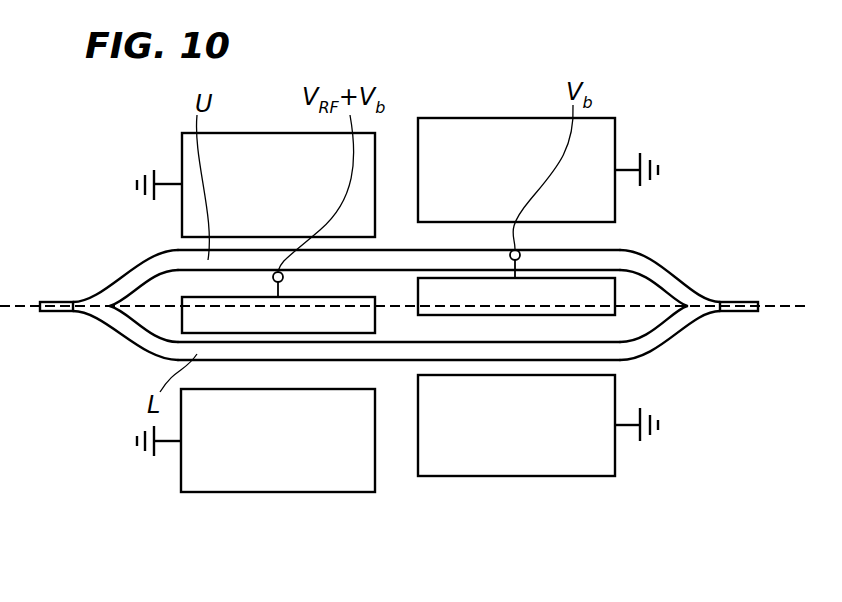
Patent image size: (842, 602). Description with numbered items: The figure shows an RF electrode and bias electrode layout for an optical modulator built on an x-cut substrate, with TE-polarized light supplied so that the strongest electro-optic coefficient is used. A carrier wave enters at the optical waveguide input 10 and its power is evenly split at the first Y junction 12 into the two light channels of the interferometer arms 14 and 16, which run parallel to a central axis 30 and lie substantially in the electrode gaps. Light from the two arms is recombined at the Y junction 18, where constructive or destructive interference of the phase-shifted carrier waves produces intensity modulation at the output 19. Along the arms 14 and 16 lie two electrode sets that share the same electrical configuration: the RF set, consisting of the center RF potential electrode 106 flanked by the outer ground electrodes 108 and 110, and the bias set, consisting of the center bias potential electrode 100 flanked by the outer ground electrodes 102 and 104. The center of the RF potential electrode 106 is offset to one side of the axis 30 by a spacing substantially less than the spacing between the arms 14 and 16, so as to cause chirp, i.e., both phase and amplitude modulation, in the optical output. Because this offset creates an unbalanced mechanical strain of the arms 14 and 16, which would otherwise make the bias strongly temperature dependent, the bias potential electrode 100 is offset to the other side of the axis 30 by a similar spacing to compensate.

The optical waveguide input 10 is at (63, 302).
The first Y junction 12 is at (118, 286).
The MZI arm 14 is at (387, 248).
The MZI arm 16 is at (403, 363).
The Y junction 18 is at (663, 271).
The output 19 is at (731, 312).
The axis 30 is at (152, 315).
The bias potential electrode 100 is at (603, 315).
The ground electrode 102 is at (433, 476).
The ground electrode 104 is at (478, 118).
The RF potential electrode 106 is at (195, 297).
The ground electrode 108 is at (202, 492).
The ground electrode 110 is at (242, 133).